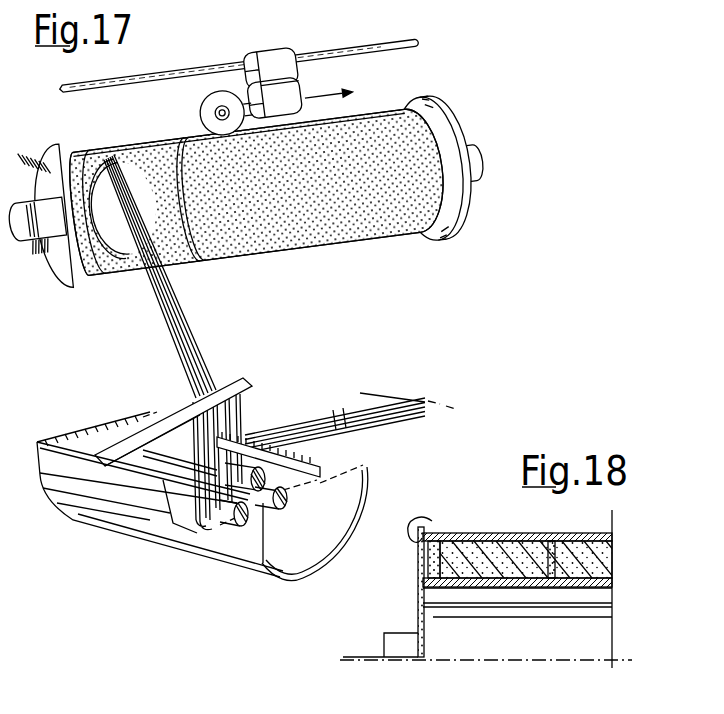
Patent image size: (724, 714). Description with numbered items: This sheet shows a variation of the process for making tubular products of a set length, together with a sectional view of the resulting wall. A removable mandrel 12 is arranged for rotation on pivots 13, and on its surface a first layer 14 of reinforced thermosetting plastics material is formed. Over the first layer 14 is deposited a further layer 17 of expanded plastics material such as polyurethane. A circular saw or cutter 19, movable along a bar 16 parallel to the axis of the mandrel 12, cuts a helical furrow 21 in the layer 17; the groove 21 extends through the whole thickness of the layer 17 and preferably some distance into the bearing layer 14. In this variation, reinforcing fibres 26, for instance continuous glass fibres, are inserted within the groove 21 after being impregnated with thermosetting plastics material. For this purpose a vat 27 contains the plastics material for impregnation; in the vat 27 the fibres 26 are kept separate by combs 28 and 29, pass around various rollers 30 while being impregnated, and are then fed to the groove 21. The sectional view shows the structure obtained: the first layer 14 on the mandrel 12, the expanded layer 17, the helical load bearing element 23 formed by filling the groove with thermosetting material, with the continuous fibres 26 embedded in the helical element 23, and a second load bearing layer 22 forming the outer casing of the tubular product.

In FIG. 18, the removable mandrel 12 is at (517, 617).
In FIG. 17, the pivots 13 is at (33, 230).
In FIG. 18, the pivots 13 is at (389, 645).
In FIG. 17, the first layer 14 is at (114, 277).
In FIG. 18, the first layer 14 is at (470, 583).
In FIG. 17, the bar 16 is at (386, 61).
In FIG. 17, the further layer 17 is at (314, 236).
In FIG. 18, the further layer 17 is at (490, 550).
In FIG. 17, the circular saw or cutter 19 is at (202, 110).
In FIG. 17, the helical furrow 21 is at (223, 252).
In FIG. 18, the second load bearing layer 22 is at (466, 537).
In FIG. 18, the helical load bearing element 23 is at (418, 560).
In FIG. 17, the reinforcing fibres 26 is at (186, 350).
In FIG. 18, the reinforcing fibres 26 is at (578, 523).
In FIG. 17, the vat 27 is at (100, 524).
In FIG. 17, the comb 28 is at (313, 462).
In FIG. 17, the comb 29 is at (247, 383).
In FIG. 17, the rollers 30 is at (278, 522).